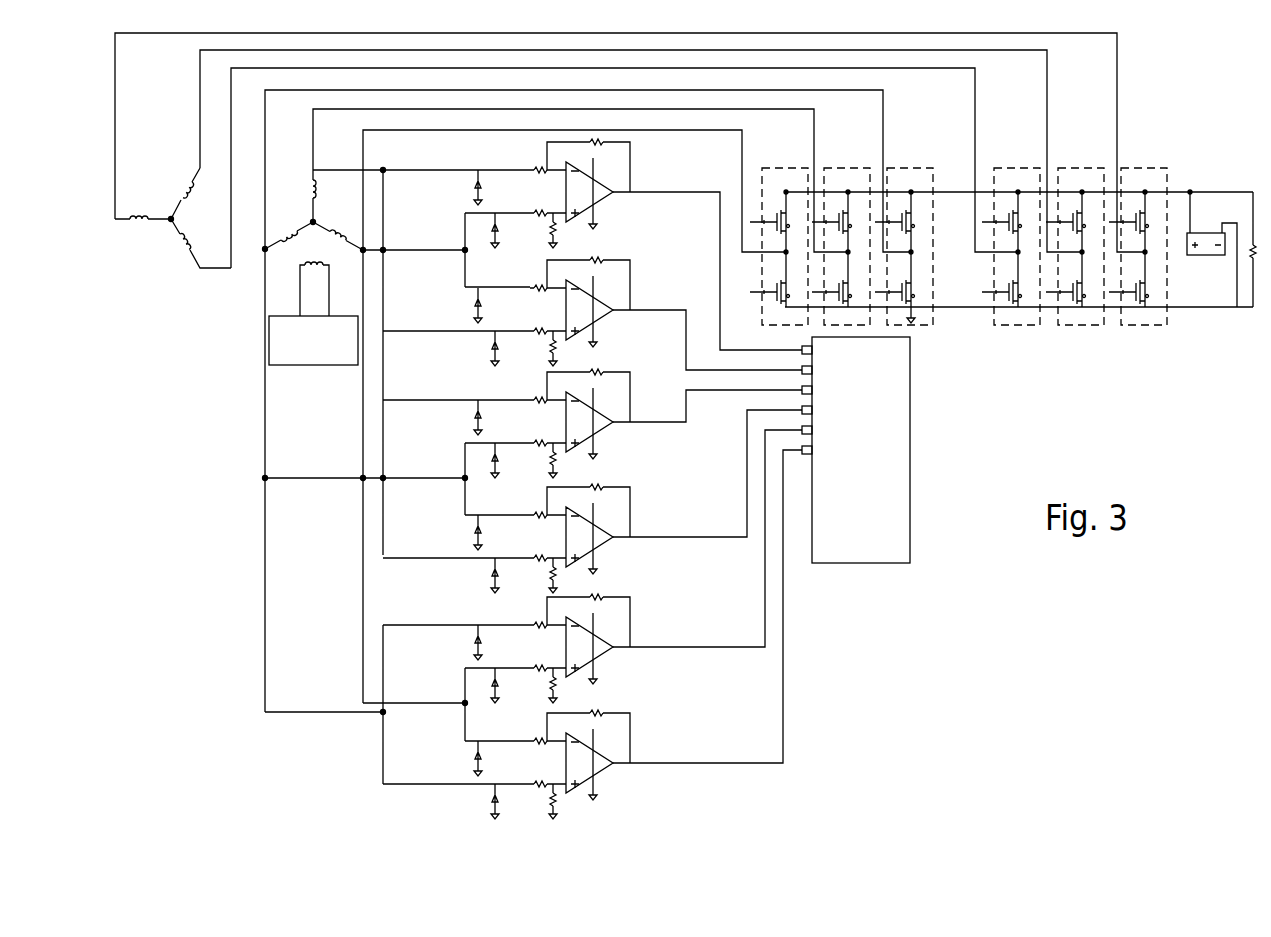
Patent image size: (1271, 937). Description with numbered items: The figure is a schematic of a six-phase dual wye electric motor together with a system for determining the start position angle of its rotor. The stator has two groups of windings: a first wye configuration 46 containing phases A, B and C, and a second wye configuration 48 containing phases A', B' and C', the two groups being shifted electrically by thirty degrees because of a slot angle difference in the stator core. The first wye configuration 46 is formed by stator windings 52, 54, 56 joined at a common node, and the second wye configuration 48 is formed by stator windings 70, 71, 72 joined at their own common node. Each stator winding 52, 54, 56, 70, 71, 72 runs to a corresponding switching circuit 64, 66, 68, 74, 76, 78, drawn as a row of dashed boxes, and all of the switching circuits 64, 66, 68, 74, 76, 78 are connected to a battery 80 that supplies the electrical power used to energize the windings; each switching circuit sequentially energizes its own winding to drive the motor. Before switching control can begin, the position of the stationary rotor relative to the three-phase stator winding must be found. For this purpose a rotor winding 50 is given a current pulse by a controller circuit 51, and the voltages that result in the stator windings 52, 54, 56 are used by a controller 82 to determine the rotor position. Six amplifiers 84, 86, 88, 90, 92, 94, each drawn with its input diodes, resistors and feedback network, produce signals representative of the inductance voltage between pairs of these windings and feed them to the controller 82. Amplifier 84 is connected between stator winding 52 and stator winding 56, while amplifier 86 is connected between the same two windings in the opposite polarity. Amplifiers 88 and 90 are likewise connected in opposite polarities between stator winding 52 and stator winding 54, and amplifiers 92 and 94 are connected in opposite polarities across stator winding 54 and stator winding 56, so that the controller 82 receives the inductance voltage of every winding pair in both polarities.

The first wye configuration 46 is at (238, 178).
The second wye configuration 48 is at (141, 219).
The rotor winding 50 is at (305, 270).
The controller circuit 51 is at (272, 355).
The stator winding 52 is at (317, 190).
The stator winding 54 is at (262, 246).
The stator winding 56 is at (340, 238).
The switching circuit 64 is at (866, 165).
The switching circuit 66 is at (910, 165).
The switching circuit 68 is at (799, 165).
The stator winding 70 is at (188, 190).
The stator winding 71 is at (138, 228).
The stator winding 72 is at (186, 246).
The switching circuit 74 is at (1096, 165).
The switching circuit 76 is at (1163, 165).
The switching circuit 78 is at (1031, 165).
The battery 80 is at (1197, 232).
The controller 82 is at (912, 388).
The amplifier 84 is at (598, 203).
The amplifier 86 is at (598, 321).
The amplifier 88 is at (598, 433).
The amplifier 90 is at (598, 548).
The amplifier 92 is at (598, 658).
The amplifier 94 is at (598, 774).